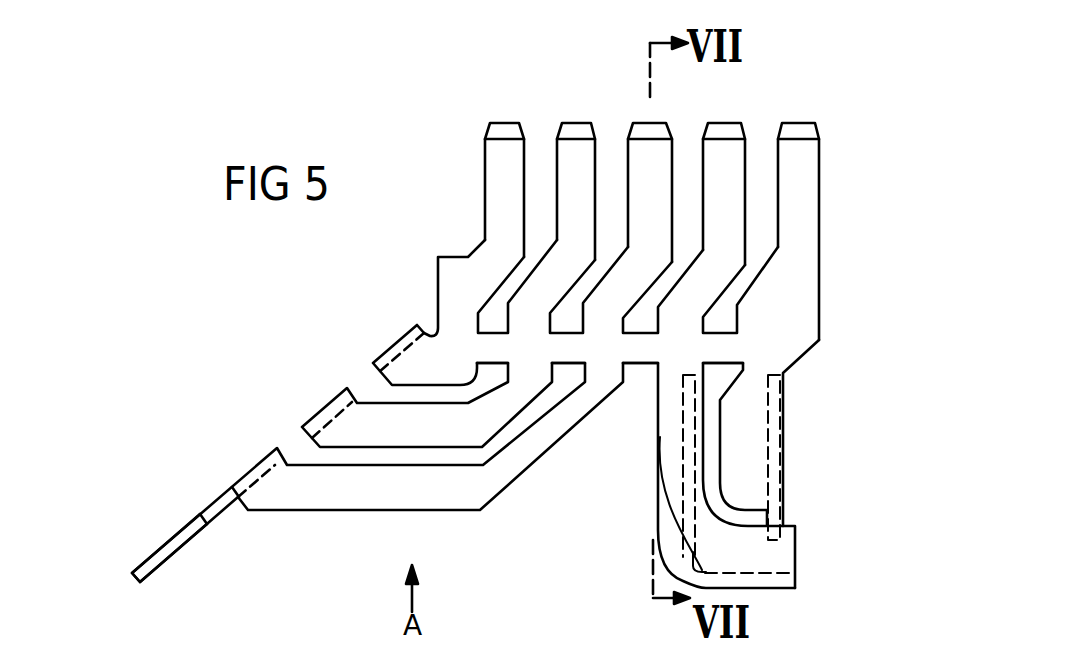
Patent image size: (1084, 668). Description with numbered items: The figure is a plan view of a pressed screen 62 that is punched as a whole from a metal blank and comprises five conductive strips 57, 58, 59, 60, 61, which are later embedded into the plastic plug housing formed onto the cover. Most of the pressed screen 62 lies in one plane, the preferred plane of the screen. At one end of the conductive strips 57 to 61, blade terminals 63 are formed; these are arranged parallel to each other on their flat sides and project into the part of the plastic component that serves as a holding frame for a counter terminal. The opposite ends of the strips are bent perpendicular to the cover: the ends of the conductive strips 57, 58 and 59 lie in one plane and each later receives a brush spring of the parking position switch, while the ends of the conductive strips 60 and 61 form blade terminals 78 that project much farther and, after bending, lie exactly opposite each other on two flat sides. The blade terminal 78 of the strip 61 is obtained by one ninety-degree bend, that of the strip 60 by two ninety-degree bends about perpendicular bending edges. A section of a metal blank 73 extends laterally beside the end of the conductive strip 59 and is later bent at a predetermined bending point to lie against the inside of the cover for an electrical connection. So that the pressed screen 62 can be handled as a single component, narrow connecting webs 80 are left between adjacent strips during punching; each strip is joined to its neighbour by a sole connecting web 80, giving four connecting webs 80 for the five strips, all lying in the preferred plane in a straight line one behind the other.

The conductive strip 57 is at (448, 285).
The conductive strip 58 is at (568, 297).
The conductive strip 59 is at (645, 297).
The conductive strip 60 is at (718, 297).
The conductive strip 61 is at (805, 317).
The pressed screen 62 is at (788, 83).
The blade terminals 63 is at (566, 150).
The section of a metal blank 73 is at (160, 552).
The blade terminals 78 is at (765, 410).
The connecting webs 80 is at (723, 351).